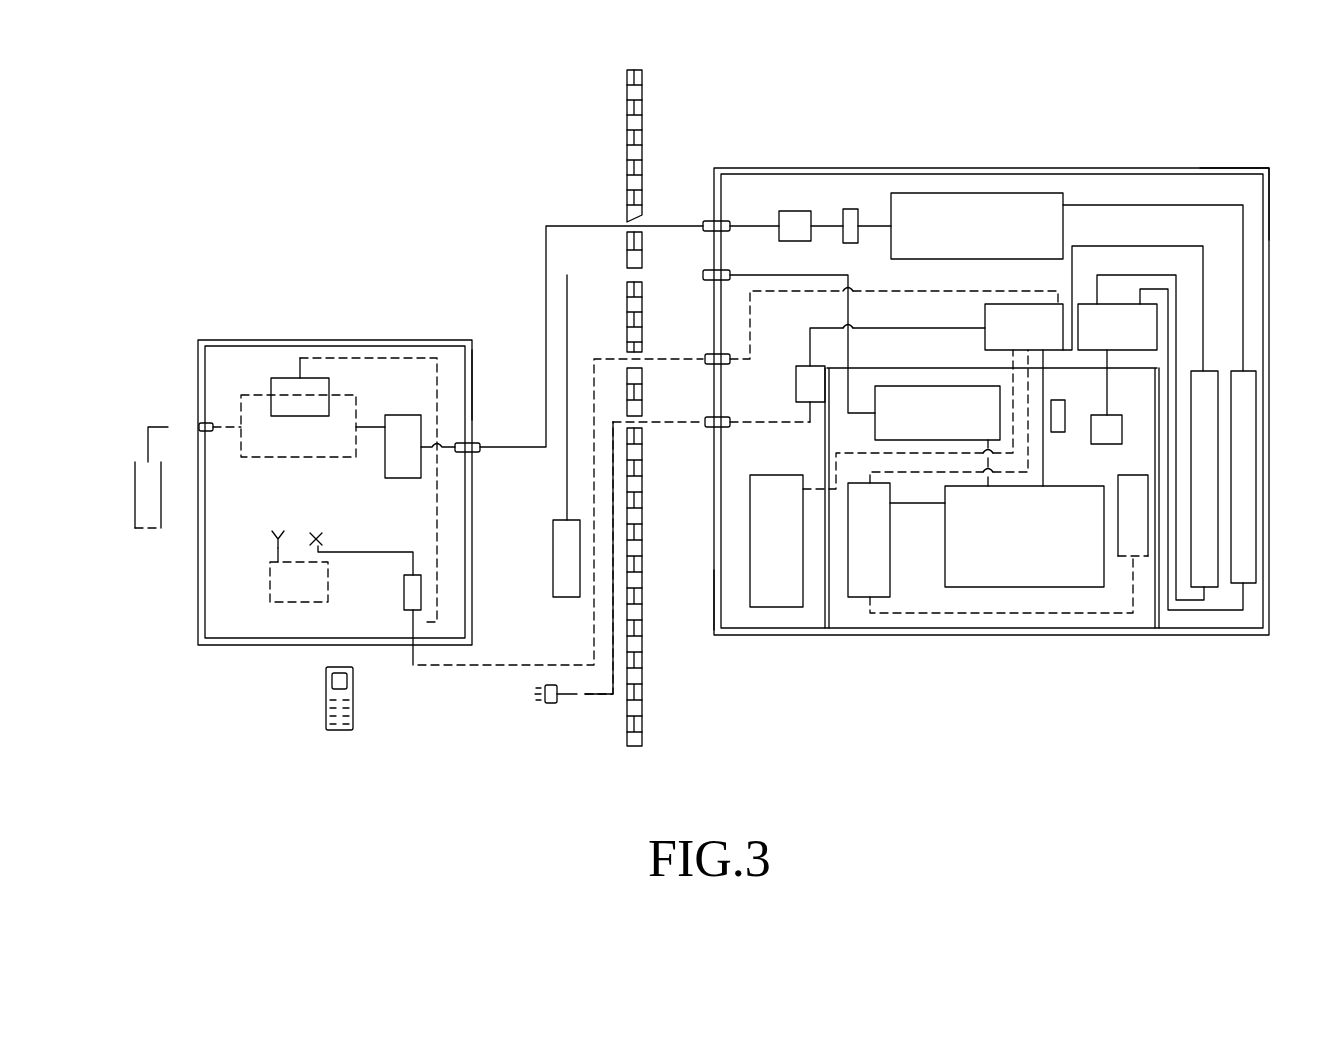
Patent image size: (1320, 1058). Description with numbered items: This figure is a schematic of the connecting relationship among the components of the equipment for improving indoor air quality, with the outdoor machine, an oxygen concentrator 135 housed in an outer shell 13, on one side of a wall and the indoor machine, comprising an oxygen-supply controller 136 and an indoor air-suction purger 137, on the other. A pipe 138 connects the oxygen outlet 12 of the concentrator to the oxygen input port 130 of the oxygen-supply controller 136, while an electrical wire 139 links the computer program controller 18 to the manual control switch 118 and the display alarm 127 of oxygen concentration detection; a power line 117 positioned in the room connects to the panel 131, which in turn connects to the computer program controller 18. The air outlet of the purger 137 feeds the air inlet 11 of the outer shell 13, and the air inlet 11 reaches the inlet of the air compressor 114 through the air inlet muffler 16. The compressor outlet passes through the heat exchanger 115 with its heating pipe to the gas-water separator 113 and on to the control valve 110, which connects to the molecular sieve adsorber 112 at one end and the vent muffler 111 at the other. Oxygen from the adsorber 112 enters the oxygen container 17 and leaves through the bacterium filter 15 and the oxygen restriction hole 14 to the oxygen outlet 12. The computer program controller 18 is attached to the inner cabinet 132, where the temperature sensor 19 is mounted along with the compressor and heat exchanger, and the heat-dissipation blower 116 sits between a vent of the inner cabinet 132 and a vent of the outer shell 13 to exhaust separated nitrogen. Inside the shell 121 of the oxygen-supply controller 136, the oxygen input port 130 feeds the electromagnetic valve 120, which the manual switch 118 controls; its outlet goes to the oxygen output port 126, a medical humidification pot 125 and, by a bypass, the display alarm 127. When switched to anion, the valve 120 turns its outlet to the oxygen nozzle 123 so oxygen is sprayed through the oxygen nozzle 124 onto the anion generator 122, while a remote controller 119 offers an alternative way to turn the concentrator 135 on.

The air inlet 11 is at (708, 275).
The oxygen outlet 12 is at (708, 225).
The outer shell 13 is at (738, 170).
The oxygen restriction hole 14 is at (795, 222).
The bacterium filter 15 is at (850, 224).
The air inlet muffler 16 is at (881, 397).
The oxygen container 17 is at (945, 205).
The computer program controller 18 is at (992, 312).
The temperature sensor 19 is at (1057, 407).
The control valve 110 is at (1107, 310).
The vent muffler 111 is at (1115, 428).
The molecular sieve adsorber 112 is at (1207, 575).
The gas-water separator 113 is at (1133, 548).
The air compressor 114 is at (1053, 579).
The heat exchanger with heating pipe 115 is at (879, 587).
The heat-dissipation blower 116 is at (790, 600).
The power line 117 is at (551, 702).
The manual control switch 118 is at (418, 602).
The remote controller 119 is at (331, 731).
The electromagnetic valve 120 is at (401, 464).
The shell 121 is at (238, 641).
The anion generator 122 is at (278, 597).
The oxygen nozzle 123 is at (262, 556).
The oxygen nozzle 124 is at (268, 537).
The medical humidification pot 125 is at (138, 488).
The oxygen output port 126 is at (190, 427).
The display alarm of oxygen concentration detection 127 is at (277, 388).
The oxygen input port 130 is at (473, 451).
The panel 131 is at (797, 396).
The inner cabinet 132 is at (714, 600).
The oxygen concentrator 135 is at (1262, 168).
The oxygen-supply controller 136 is at (476, 381).
The indoor air-suction purger 137 is at (555, 598).
The pipe 138 is at (547, 226).
The electrical wire 139 is at (495, 665).